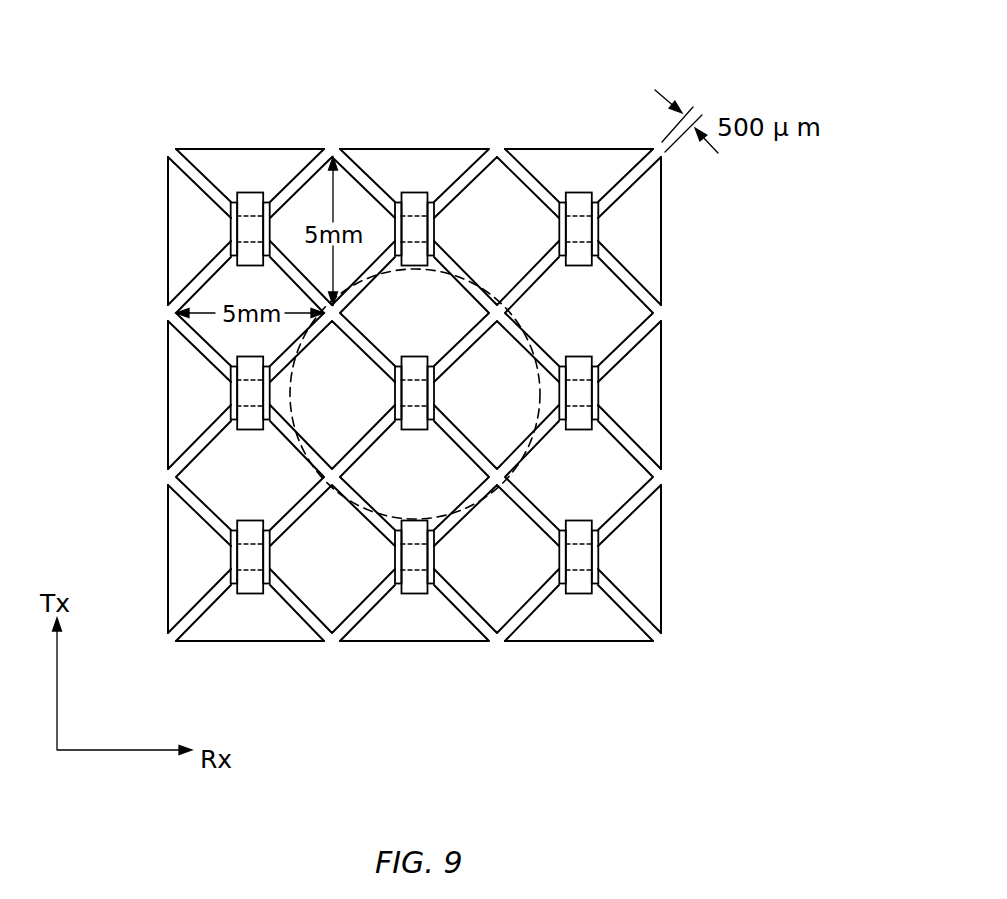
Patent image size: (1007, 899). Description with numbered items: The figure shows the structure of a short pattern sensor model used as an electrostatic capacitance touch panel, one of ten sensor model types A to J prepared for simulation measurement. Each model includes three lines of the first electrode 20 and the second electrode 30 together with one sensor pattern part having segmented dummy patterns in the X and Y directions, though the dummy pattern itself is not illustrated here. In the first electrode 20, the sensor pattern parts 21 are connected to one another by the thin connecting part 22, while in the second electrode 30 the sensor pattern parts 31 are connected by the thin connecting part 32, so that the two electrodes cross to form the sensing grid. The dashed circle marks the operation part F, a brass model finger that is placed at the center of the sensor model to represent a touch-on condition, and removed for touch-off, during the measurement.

The first electrode 20 is at (155, 237).
The sensor pattern part 21 is at (535, 358).
The thin connecting part 22 is at (256, 220).
The second electrode 30 is at (246, 652).
The sensor pattern part 31 is at (197, 297).
The thin connecting part 32 is at (238, 190).
The operation part F is at (522, 478).